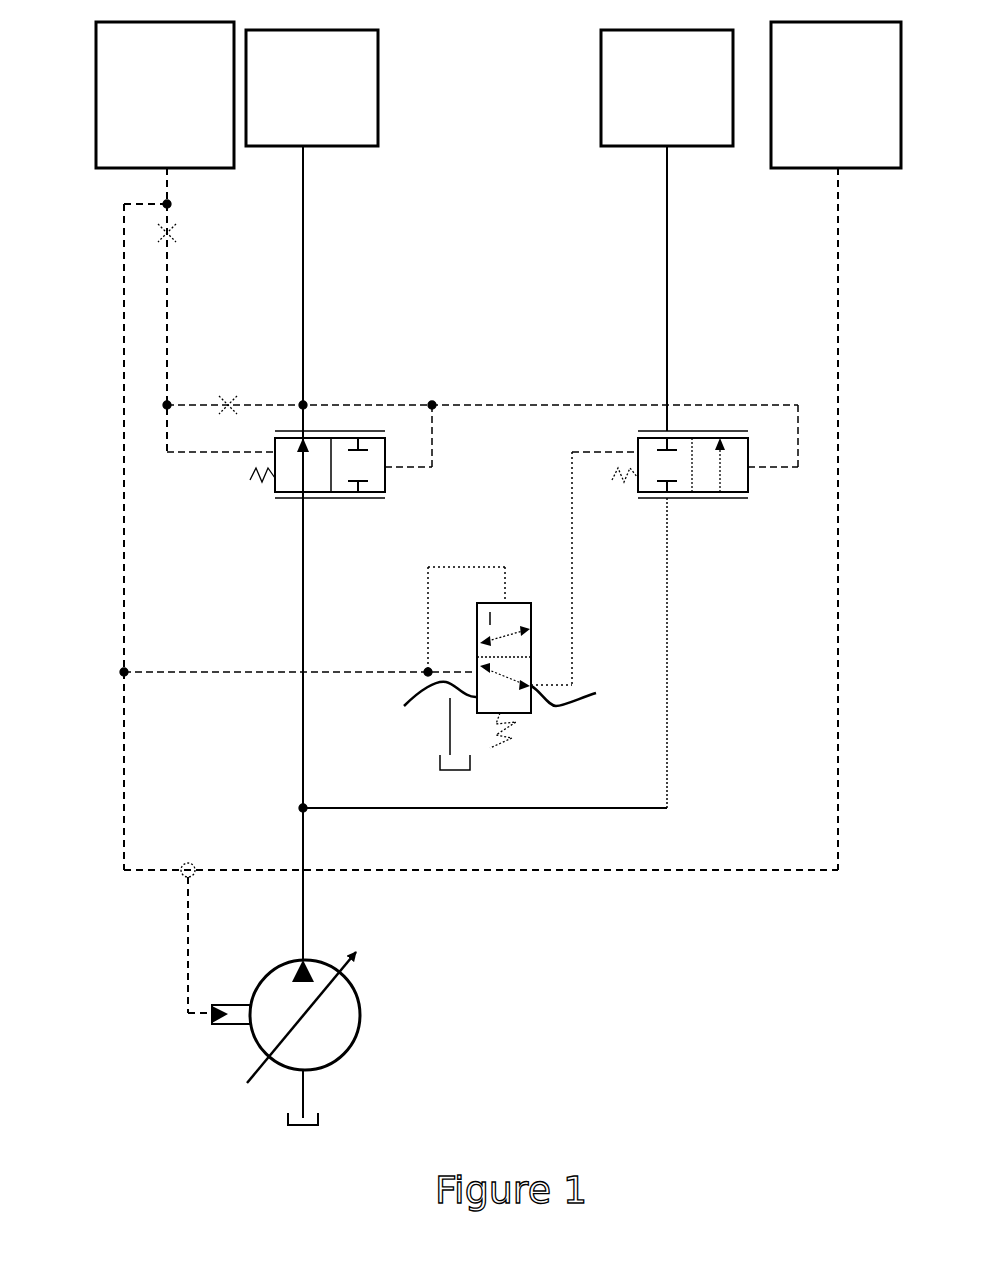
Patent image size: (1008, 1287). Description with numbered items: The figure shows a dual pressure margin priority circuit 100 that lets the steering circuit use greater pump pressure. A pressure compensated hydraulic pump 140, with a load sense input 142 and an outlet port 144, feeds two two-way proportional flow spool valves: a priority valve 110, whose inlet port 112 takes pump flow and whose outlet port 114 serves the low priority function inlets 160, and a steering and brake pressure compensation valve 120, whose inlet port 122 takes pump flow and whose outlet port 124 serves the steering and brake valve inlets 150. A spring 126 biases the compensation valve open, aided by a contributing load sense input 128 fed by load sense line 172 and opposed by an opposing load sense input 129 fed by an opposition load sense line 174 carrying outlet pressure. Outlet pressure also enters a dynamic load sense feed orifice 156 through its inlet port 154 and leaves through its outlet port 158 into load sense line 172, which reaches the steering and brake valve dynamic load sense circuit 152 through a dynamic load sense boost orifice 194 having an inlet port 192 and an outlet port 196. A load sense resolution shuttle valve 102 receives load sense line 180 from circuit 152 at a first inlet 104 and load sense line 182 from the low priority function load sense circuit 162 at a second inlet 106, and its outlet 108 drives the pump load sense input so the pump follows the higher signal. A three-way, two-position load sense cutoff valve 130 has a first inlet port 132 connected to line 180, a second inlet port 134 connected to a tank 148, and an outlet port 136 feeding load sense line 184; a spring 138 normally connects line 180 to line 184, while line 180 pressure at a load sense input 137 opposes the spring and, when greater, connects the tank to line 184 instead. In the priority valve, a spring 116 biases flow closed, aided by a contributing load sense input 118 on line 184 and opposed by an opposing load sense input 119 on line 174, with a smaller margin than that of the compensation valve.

The dual pressure margin priority circuit 100 is at (525, 183).
The load sense resolution shuttle valve 102 is at (192, 856).
The first inlet 104 is at (176, 870).
The second inlet 106 is at (200, 868).
The outlet 108 is at (184, 878).
The priority valve 110 is at (745, 528).
The inlet port 112 is at (667, 500).
The outlet port 114 is at (668, 430).
The spring 116 is at (624, 478).
The contributing load sense input 118 is at (638, 457).
The opposing load sense input 119 is at (750, 468).
The steering and brake pressure compensation valve 120 is at (376, 520).
The inlet port 122 is at (303, 500).
The outlet port 124 is at (304, 430).
The spring 126 is at (252, 477).
The contributing load sense input 128 is at (275, 457).
The opposing load sense input 129 is at (387, 468).
The load sense cutoff valve 130 is at (562, 728).
The first inlet port 132 is at (478, 668).
The second inlet port 134 is at (427, 709).
The outlet port 136 is at (581, 689).
The load sense input 137 is at (506, 605).
The spring 138 is at (510, 732).
The pressure compensated hydraulic pump 140 is at (372, 1019).
The load sense input 142 is at (228, 1024).
The outlet port 144 is at (290, 966).
The tank 148 is at (432, 768).
The steering and brake valve inlets 150 is at (378, 98).
The steering and brake valve dynamic load sense circuit 152 is at (96, 78).
The inlet port 154 is at (240, 402).
The dynamic load sense feed orifice 156 is at (229, 394).
The outlet port 158 is at (218, 402).
The low priority function inlets 160 is at (601, 74).
The low priority function load sense circuit 162 is at (771, 160).
The load sense line 172 is at (168, 353).
The opposition load sense line 174 is at (520, 402).
The load sense line 180 is at (124, 582).
The load sense line 182 is at (838, 681).
The load sense line 184 is at (572, 572).
The inlet port 192 is at (173, 252).
The dynamic load sense boost orifice 194 is at (185, 235).
The outlet port 196 is at (178, 223).